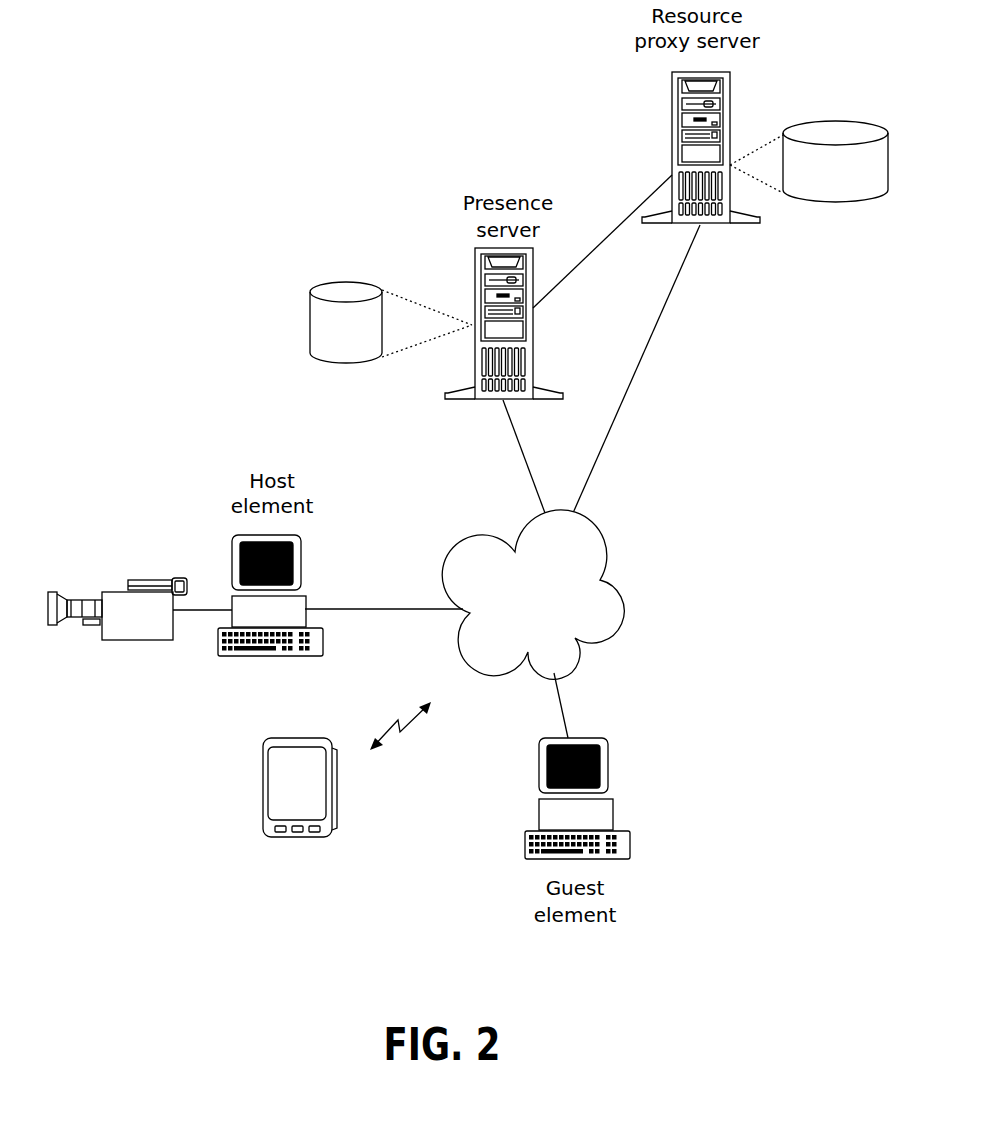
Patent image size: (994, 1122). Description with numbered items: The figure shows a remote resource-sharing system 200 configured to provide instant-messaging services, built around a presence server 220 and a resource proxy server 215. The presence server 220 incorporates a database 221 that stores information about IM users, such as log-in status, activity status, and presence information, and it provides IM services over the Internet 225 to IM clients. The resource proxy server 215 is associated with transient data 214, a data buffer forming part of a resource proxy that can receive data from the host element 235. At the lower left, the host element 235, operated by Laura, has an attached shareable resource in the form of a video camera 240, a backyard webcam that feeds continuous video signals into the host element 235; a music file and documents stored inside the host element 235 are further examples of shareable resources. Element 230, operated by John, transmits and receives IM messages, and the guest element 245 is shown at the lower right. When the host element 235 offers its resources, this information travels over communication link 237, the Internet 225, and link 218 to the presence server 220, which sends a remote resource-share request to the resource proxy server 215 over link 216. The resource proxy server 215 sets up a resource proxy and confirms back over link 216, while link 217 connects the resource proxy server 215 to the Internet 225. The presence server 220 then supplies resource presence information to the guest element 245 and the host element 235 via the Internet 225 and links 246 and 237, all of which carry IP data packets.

The remote resource-sharing system 200 is at (199, 217).
The transient data 214 is at (847, 113).
The resource proxy server 215 is at (670, 135).
The communication link 216 is at (640, 205).
The communication link 217 is at (652, 348).
The communication link 218 is at (522, 463).
The presence server 220 is at (540, 348).
The database 221 is at (360, 272).
The Internet 225 is at (595, 520).
The element 230 is at (297, 837).
The host element 235 is at (287, 658).
The communication link 237 is at (348, 602).
The video camera 240 is at (130, 647).
The guest element 245 is at (620, 867).
The communication link 246 is at (573, 713).